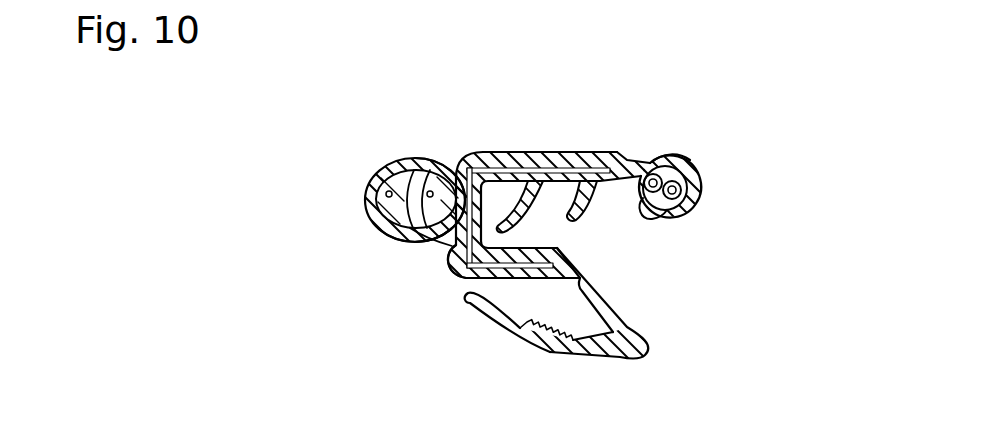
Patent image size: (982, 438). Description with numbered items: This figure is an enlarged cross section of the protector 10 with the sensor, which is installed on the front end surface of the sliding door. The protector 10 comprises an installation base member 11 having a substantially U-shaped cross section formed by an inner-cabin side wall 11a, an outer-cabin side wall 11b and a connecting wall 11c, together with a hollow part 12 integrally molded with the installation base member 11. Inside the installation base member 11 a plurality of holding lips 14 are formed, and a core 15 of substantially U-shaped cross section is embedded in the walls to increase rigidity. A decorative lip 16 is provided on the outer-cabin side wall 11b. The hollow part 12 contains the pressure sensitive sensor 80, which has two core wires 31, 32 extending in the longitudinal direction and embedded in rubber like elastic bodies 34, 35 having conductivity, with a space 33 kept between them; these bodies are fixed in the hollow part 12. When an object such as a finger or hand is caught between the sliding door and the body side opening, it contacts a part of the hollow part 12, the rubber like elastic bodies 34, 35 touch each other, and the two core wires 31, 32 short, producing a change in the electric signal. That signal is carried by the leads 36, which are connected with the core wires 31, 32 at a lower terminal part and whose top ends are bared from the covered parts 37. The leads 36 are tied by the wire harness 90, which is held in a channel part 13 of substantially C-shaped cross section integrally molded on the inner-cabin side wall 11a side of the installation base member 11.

The protector with the sensor 10 is at (737, 112).
The installation base member 11 is at (570, 150).
The inner-cabin side wall 11a is at (522, 150).
The outer-cabin side wall 11b is at (520, 278).
The connecting wall 11c is at (460, 268).
The hollow part 12 is at (433, 168).
The channel part 13 is at (692, 158).
The holding lips 14 is at (583, 213).
The core 15 is at (470, 270).
The decorative lip 16 is at (535, 352).
The core wire 31 is at (380, 163).
The core wire 32 is at (430, 169).
The space 33 is at (450, 246).
The rubber like elastic body 34 is at (408, 240).
The rubber like elastic body 35 is at (453, 167).
The leads 36 is at (683, 194).
The covered parts 37 is at (655, 175).
The pressure sensitive sensor 80 is at (380, 205).
The wire harness 90 is at (664, 165).